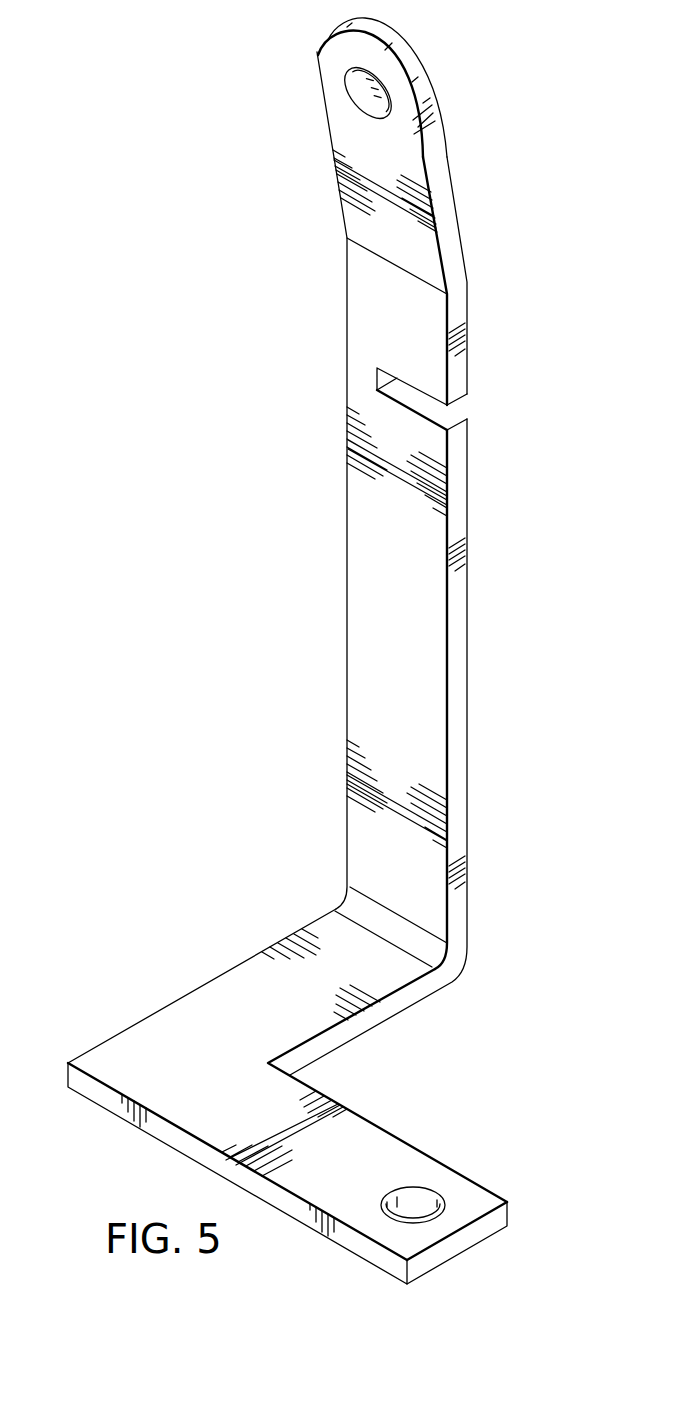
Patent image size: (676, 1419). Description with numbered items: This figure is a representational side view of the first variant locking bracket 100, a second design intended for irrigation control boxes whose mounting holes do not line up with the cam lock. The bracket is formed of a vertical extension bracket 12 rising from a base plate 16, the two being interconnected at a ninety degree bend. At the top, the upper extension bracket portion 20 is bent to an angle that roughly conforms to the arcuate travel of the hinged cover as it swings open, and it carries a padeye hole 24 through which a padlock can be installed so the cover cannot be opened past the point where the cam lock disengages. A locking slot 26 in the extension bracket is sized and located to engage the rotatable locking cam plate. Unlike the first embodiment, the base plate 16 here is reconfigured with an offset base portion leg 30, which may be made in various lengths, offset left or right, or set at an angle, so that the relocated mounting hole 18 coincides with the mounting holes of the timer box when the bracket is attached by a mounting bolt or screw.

The first variant locking bracket 100 is at (88, 223).
The vertical extension bracket 12 is at (468, 628).
The base plate 16 is at (225, 987).
The mounting hole 18 is at (416, 1204).
The upper extension bracket portion 20 is at (449, 160).
The padeye hole 24 is at (359, 107).
The locking slot 26 is at (458, 408).
The offset base portion leg 30 is at (477, 1193).